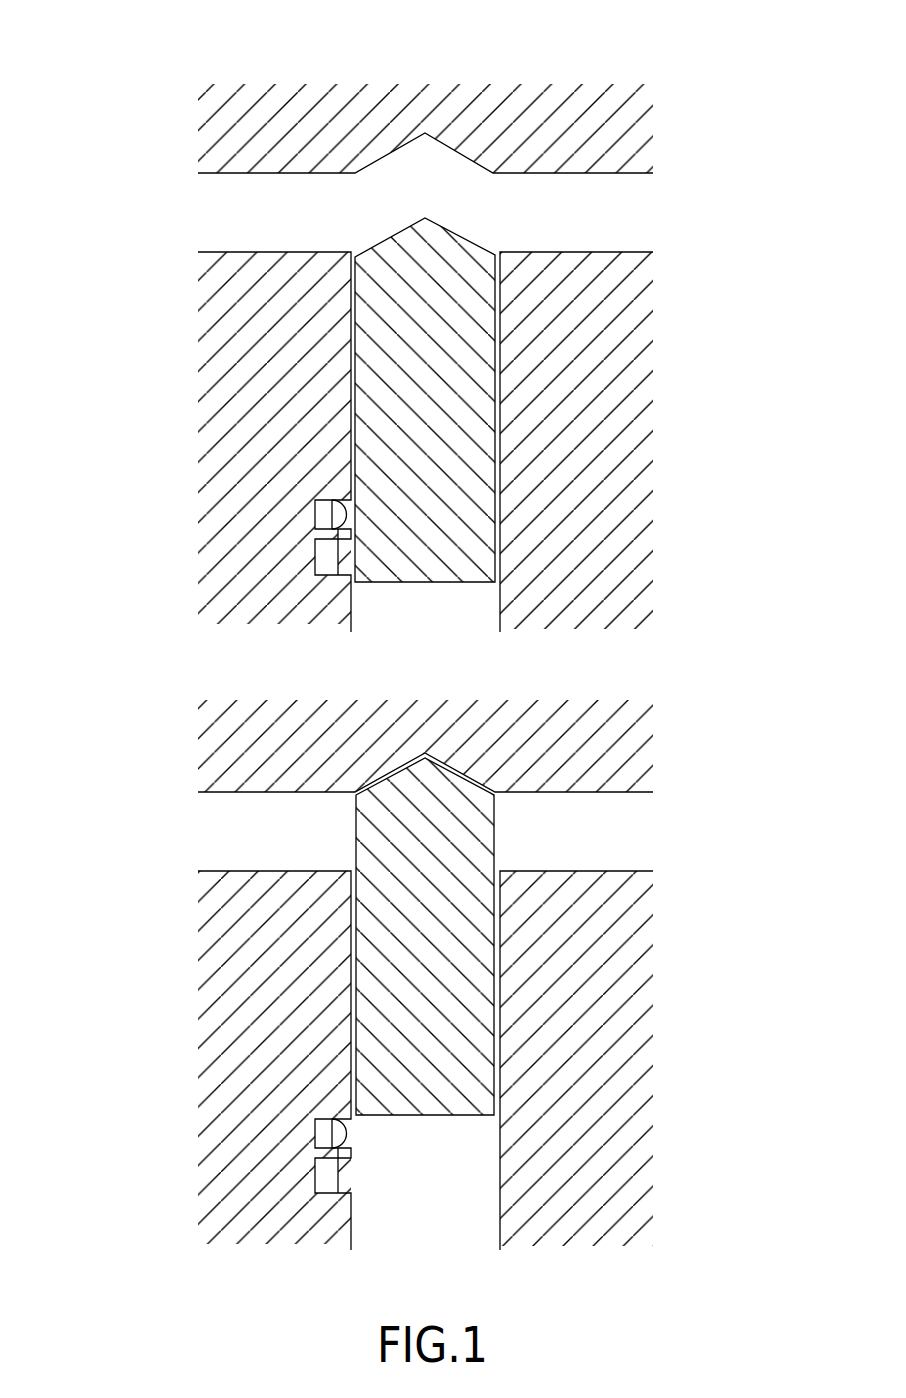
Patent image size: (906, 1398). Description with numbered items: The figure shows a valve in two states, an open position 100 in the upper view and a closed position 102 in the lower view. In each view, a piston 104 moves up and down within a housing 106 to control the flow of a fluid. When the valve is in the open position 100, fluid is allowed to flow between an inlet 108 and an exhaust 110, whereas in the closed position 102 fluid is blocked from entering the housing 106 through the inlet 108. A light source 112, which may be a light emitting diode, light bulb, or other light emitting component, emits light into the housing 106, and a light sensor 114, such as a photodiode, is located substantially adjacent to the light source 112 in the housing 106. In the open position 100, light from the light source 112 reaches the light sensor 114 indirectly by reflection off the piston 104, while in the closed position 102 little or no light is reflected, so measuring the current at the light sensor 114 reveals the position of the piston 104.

The open position 100 is at (178, 92).
The closed position 102 is at (135, 703).
The piston 104 is at (485, 373).
The housing 106 is at (643, 520).
The inlet 108 is at (207, 202).
The exhaust 110 is at (642, 205).
The light source 112 is at (322, 512).
The light sensor 114 is at (322, 567).